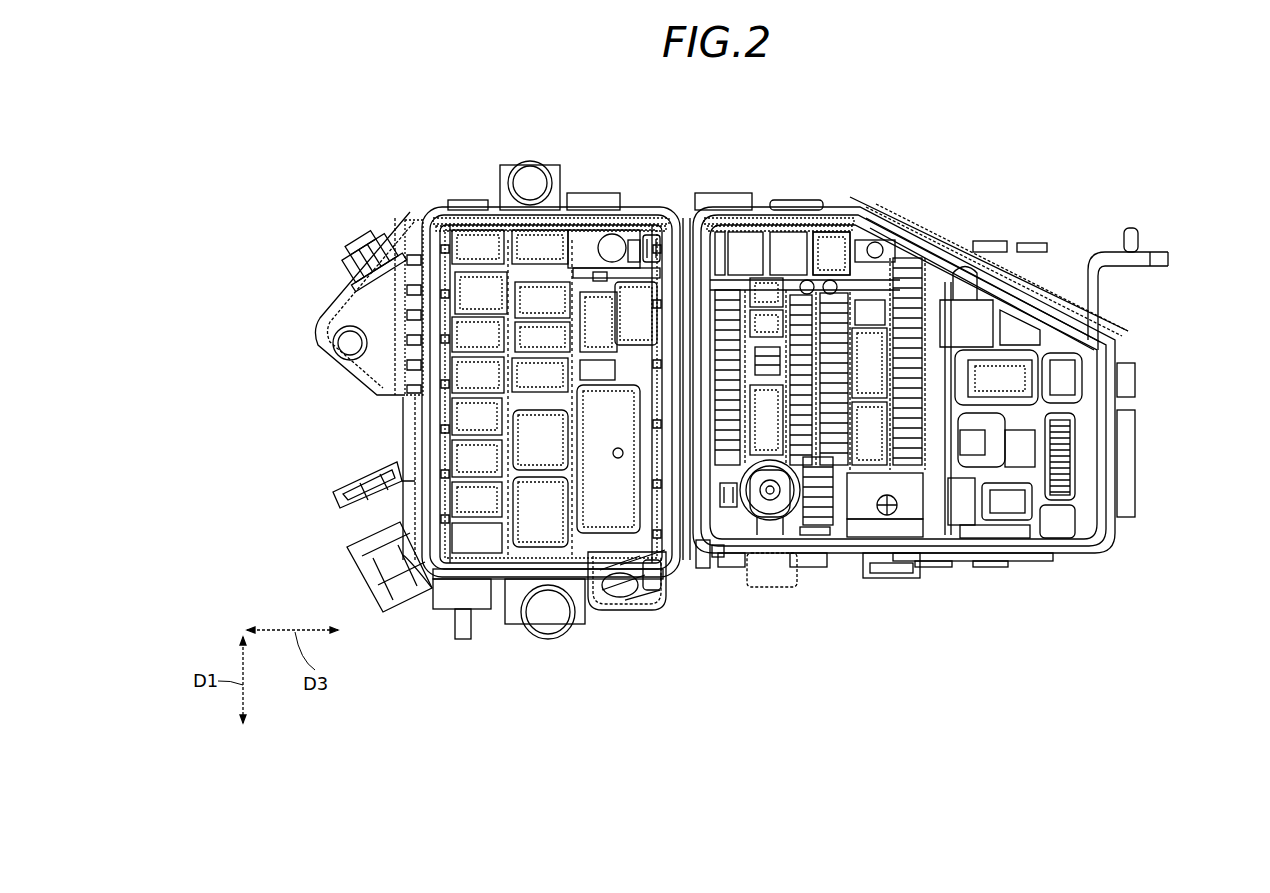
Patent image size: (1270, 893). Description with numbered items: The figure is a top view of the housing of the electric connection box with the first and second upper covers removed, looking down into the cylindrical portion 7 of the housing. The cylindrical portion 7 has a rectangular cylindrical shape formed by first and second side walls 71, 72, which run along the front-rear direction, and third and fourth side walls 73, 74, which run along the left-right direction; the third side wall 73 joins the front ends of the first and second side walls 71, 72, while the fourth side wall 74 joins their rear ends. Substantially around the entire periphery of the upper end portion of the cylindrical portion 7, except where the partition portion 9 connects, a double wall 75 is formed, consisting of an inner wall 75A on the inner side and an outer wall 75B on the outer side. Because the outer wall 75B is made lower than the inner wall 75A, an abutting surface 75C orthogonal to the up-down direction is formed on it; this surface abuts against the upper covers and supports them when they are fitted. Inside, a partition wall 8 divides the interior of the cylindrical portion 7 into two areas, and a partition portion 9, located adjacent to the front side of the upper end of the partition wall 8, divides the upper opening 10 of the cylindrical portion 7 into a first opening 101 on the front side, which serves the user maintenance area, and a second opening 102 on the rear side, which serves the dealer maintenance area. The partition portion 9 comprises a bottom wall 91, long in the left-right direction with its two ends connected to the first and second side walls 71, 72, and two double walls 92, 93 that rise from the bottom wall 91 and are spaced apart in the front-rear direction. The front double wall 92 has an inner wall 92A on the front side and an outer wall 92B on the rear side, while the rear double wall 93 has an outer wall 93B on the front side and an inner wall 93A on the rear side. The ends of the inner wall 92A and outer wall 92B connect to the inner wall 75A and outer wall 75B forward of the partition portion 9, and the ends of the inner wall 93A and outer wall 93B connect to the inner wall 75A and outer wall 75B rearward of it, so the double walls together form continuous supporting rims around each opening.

The cylindrical portion 7 is at (1188, 770).
The first side wall 71 is at (850, 562).
The second side wall 72 is at (662, 212).
The third side wall 73 is at (1117, 538).
The fourth side wall 74 is at (427, 467).
The double wall 75 is at (450, 127).
The inner wall 75A is at (437, 247).
The outer wall 75B is at (437, 240).
The abutting surface 75C is at (407, 300).
The partition wall 8 is at (660, 253).
The partition portion 9 is at (1105, 758).
The bottom wall 91 is at (692, 562).
The front double wall 92 is at (805, 639).
The inner wall 92A is at (767, 562).
The outer wall 92B is at (735, 570).
The rear double wall 93 is at (680, 677).
The inner wall 93A is at (617, 602).
The outer wall 93B is at (655, 602).
The opening 10 is at (1010, 748).
The first opening 101 is at (838, 244).
The second opening 102 is at (587, 242).